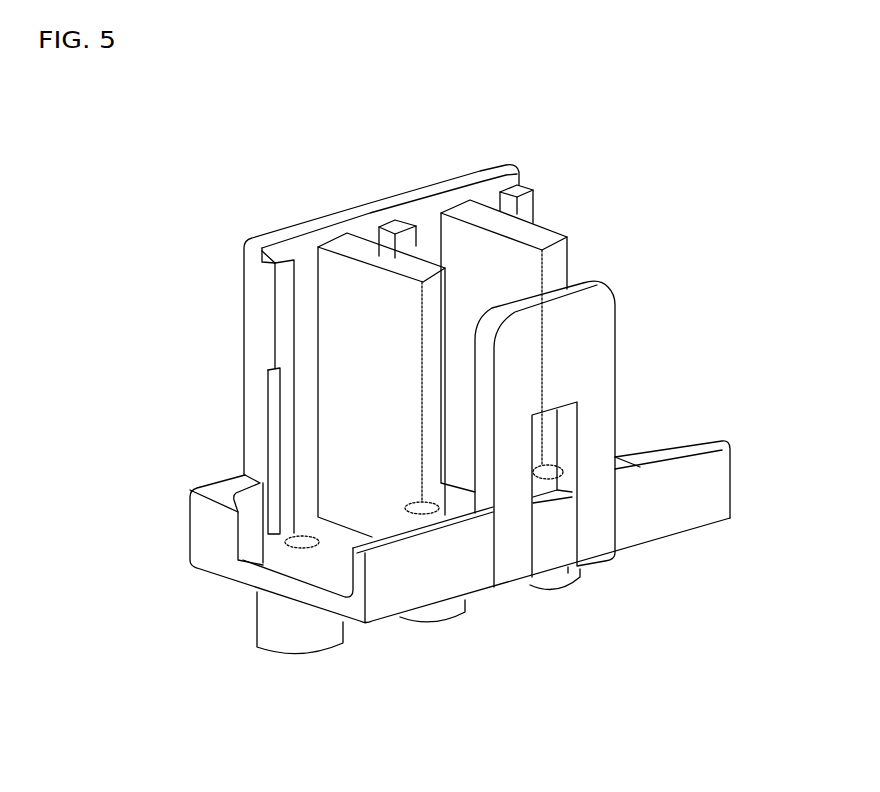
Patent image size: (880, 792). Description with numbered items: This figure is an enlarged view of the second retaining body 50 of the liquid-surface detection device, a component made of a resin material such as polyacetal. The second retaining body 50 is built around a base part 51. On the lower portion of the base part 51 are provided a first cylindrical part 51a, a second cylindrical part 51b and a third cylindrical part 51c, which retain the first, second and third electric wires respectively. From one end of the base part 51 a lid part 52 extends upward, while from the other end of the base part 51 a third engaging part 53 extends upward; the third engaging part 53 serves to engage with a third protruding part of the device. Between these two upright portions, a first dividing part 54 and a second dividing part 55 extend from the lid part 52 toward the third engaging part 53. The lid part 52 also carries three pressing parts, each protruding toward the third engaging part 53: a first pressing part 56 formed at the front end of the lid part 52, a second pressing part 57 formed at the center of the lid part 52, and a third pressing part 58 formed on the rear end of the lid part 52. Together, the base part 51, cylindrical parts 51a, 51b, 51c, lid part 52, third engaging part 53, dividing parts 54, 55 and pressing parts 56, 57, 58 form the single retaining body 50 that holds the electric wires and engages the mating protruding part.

The second retaining body 50 is at (627, 229).
The base part 51 is at (250, 576).
The first cylindrical part 51a is at (300, 658).
The second cylindrical part 51b is at (437, 623).
The third cylindrical part 51c is at (557, 592).
The lid part 52 is at (372, 208).
The third engaging part 53 is at (567, 335).
The first dividing part 54 is at (375, 328).
The second dividing part 55 is at (497, 283).
The first pressing part 56 is at (286, 277).
The second pressing part 57 is at (404, 241).
The third pressing part 58 is at (523, 205).